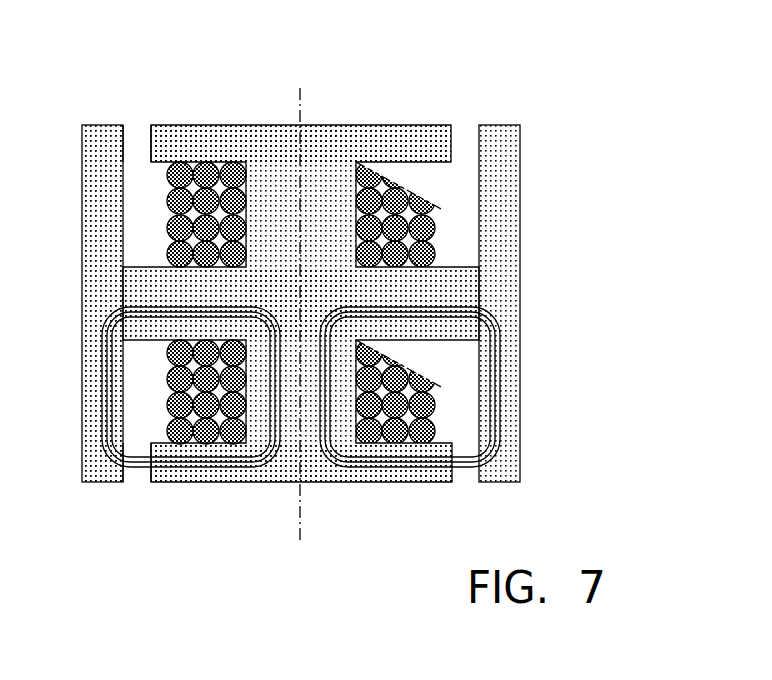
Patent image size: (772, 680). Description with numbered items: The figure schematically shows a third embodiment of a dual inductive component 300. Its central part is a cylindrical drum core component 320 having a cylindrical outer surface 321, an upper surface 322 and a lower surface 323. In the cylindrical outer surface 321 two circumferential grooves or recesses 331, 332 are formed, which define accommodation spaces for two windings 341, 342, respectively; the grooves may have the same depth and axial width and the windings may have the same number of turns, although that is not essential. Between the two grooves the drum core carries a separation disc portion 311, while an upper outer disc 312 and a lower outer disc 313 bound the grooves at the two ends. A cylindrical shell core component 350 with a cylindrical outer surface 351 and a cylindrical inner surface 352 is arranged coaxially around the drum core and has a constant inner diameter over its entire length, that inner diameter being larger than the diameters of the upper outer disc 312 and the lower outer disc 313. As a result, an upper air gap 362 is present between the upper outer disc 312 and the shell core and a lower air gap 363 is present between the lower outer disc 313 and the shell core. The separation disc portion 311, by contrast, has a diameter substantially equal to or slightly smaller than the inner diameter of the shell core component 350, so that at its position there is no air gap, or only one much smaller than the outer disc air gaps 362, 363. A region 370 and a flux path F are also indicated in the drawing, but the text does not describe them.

The dual inductive component 300 is at (360, 310).
The separation disc portion 311 is at (180, 290).
The upper outer disc 312 is at (418, 142).
The lower outer disc 313 is at (403, 474).
The cylindrical drum core component 320 is at (208, 492).
The cylindrical outer surface 321 is at (456, 128).
The upper surface 322 is at (350, 125).
The lower surface 323 is at (338, 483).
The circumferential groove 331 is at (428, 182).
The circumferential groove 332 is at (420, 354).
The winding 341 is at (397, 228).
The winding 342 is at (400, 405).
The cylindrical shell core component 350 is at (93, 491).
The cylindrical outer surface 351 is at (82, 178).
The cylindrical inner surface 352 is at (125, 182).
The upper air gap 362 is at (138, 143).
The lower air gap 363 is at (137, 478).
The center leg 370 is at (466, 285).
The magnetic flux F is at (92, 395).